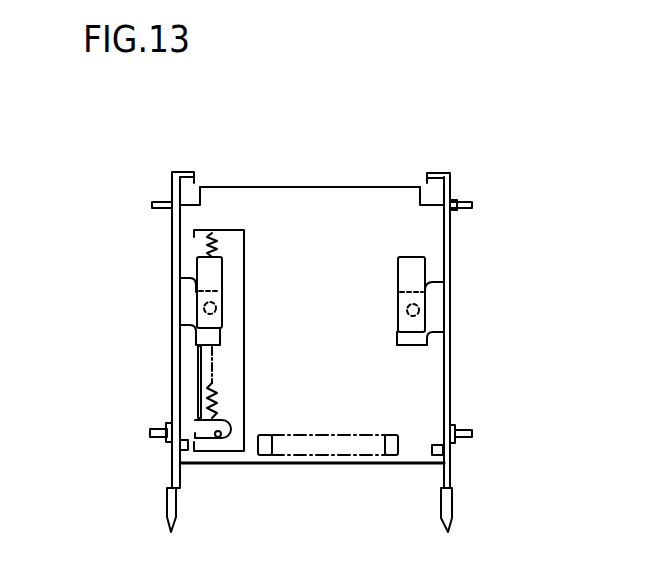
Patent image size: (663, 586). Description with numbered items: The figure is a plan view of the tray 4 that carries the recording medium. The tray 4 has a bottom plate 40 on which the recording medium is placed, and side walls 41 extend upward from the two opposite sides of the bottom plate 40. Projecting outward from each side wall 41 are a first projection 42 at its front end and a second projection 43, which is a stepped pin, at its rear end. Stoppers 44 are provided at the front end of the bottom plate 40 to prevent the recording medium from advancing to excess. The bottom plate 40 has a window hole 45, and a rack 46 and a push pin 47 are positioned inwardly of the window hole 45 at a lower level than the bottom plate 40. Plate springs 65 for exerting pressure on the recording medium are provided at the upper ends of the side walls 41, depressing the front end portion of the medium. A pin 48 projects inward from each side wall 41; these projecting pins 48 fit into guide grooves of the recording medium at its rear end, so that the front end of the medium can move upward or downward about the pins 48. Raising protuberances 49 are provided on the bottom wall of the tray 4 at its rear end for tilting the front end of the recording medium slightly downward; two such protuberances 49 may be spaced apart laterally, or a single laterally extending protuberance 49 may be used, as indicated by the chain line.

The tray 4 is at (160, 352).
The bottom plate 40 is at (348, 187).
The side wall 41 is at (172, 278).
The first projection 42 is at (157, 201).
The second projection 43 is at (150, 436).
The stopper 44 is at (192, 173).
The window hole 45 is at (246, 280).
The rack 46 is at (217, 395).
The push pin 47 is at (222, 430).
The projecting pin 48 is at (181, 449).
The raising protuberance 49 is at (265, 455).
The plate spring 65 is at (222, 318).